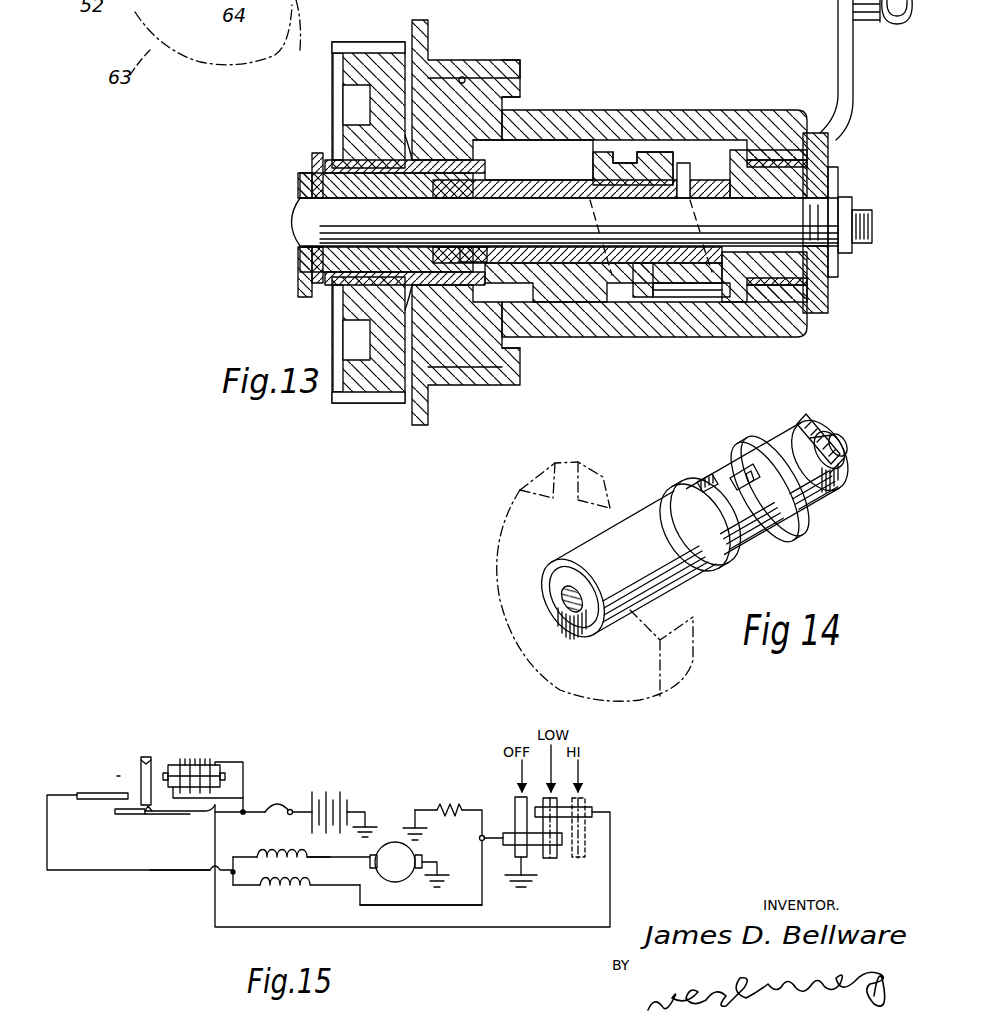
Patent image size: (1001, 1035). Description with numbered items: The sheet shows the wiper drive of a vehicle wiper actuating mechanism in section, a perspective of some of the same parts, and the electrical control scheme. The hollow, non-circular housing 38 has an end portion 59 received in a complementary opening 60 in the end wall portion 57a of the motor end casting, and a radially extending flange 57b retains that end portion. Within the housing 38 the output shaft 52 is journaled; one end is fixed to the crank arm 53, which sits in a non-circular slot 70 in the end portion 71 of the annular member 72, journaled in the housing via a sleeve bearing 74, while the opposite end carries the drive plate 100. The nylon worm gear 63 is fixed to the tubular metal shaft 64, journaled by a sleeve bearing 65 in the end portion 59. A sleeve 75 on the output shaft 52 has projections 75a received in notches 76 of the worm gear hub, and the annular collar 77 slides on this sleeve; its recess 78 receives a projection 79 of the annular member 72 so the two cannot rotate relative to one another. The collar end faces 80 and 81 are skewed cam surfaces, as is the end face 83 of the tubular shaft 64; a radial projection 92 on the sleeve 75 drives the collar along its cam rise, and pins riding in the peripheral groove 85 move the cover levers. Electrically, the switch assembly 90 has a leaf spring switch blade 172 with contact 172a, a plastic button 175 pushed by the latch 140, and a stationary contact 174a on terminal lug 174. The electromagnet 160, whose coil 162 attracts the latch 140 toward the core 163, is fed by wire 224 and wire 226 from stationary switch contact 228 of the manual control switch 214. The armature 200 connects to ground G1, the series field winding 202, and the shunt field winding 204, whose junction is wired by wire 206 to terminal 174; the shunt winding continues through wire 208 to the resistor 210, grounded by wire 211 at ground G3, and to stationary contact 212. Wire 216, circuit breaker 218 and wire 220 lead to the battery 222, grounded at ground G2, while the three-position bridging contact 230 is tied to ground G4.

In FIG. 13, the housing 38 is at (600, 110).
In FIG. 13, the output shaft 52 is at (806, 207).
In FIG. 14, the output shaft 52 is at (565, 604).
In FIG. 13, the crank arm 53 is at (838, 64).
In FIG. 14, the crank arm 53 is at (838, 438).
In FIG. 13, the end wall portion 57a is at (505, 66).
In FIG. 13, the radially extending flange 57b is at (545, 108).
In FIG. 13, the end portion 59 is at (514, 72).
In FIG. 13, the opening 60 is at (462, 78).
In FIG. 13, the nylon worm gear 63 is at (368, 403).
In FIG. 14, the nylon worm gear 63 is at (500, 522).
In FIG. 13, the tubular metal shaft 64 is at (345, 165).
In FIG. 14, the tubular metal shaft 64 is at (635, 525).
In FIG. 13, the sleeve bearing 65 is at (458, 300).
In FIG. 13, the non-circular slot 70 is at (830, 160).
In FIG. 14, the non-circular slot 70 is at (803, 440).
In FIG. 13, the end portion 71 is at (834, 310).
In FIG. 14, the end portion 71 is at (848, 452).
In FIG. 13, the annular member 72 is at (826, 272).
In FIG. 14, the annular member 72 is at (838, 468).
In FIG. 13, the sleeve bearing 74 is at (782, 302).
In FIG. 13, the sleeve 75 is at (750, 152).
In FIG. 14, the sleeve 75 is at (728, 552).
In FIG. 13, the projections 75a is at (465, 248).
In FIG. 13, the notches 76 is at (455, 198).
In FIG. 13, the annular collar 77 is at (585, 302).
In FIG. 14, the annular collar 77 is at (678, 492).
In FIG. 13, the axially extending recess 78 is at (645, 298).
In FIG. 14, the axially extending recess 78 is at (735, 475).
In FIG. 13, the axially extending projection 79 is at (700, 298).
In FIG. 14, the axially extending projection 79 is at (749, 471).
In FIG. 13, the left end face 80 is at (603, 152).
In FIG. 14, the left end face 80 is at (740, 540).
In FIG. 13, the right end face 81 is at (660, 152).
In FIG. 14, the right end face 81 is at (798, 540).
In FIG. 13, the end face 83 is at (597, 156).
In FIG. 14, the end face 83 is at (620, 620).
In FIG. 13, the annular peripheral groove 85 is at (624, 160).
In FIG. 14, the annular peripheral groove 85 is at (700, 480).
In FIG. 13, the radial projection 92 is at (685, 168).
In FIG. 13, the drive plate 100 is at (300, 280).
In FIG. 15, the switch assembly 90 is at (118, 775).
In FIG. 15, the latch 140 is at (152, 762).
In FIG. 15, the electromagnet 160 is at (216, 742).
In FIG. 15, the coil 162 is at (198, 760).
In FIG. 15, the magnetizable core 163 is at (244, 790).
In FIG. 15, the leaf spring switch blade 172 is at (180, 814).
In FIG. 15, the contact 172a is at (118, 812).
In FIG. 15, the terminal lug 174 is at (92, 792).
In FIG. 15, the stationary contact 174a is at (142, 760).
In FIG. 15, the plastic button 175 is at (146, 813).
In FIG. 15, the wound armature 200 is at (405, 882).
In FIG. 15, the series field winding 202 is at (264, 856).
In FIG. 15, the shunt field winding 204 is at (275, 890).
In FIG. 15, the wire 206 is at (103, 870).
In FIG. 15, the wire 208 is at (476, 908).
In FIG. 15, the resistor 210 is at (460, 808).
In FIG. 15, the wire 211 is at (437, 808).
In FIG. 15, the stationary contact 212 is at (556, 858).
In FIG. 15, the manual control switch 214 is at (597, 794).
In FIG. 15, the wire 216 is at (198, 868).
In FIG. 15, the automatic overload circuit breaker 218 is at (292, 808).
In FIG. 15, the wire 220 is at (330, 788).
In FIG. 15, the battery 222 is at (362, 790).
In FIG. 15, the wire 224 is at (272, 805).
In FIG. 15, the wire 226 is at (215, 900).
In FIG. 15, the stationary switch contact 228 is at (596, 812).
In FIG. 15, the movable bridging contact 230 is at (515, 822).
In FIG. 15, the ground G1 is at (445, 890).
In FIG. 15, the ground G2 is at (366, 822).
In FIG. 15, the ground G3 is at (428, 823).
In FIG. 15, the ground G4 is at (528, 890).